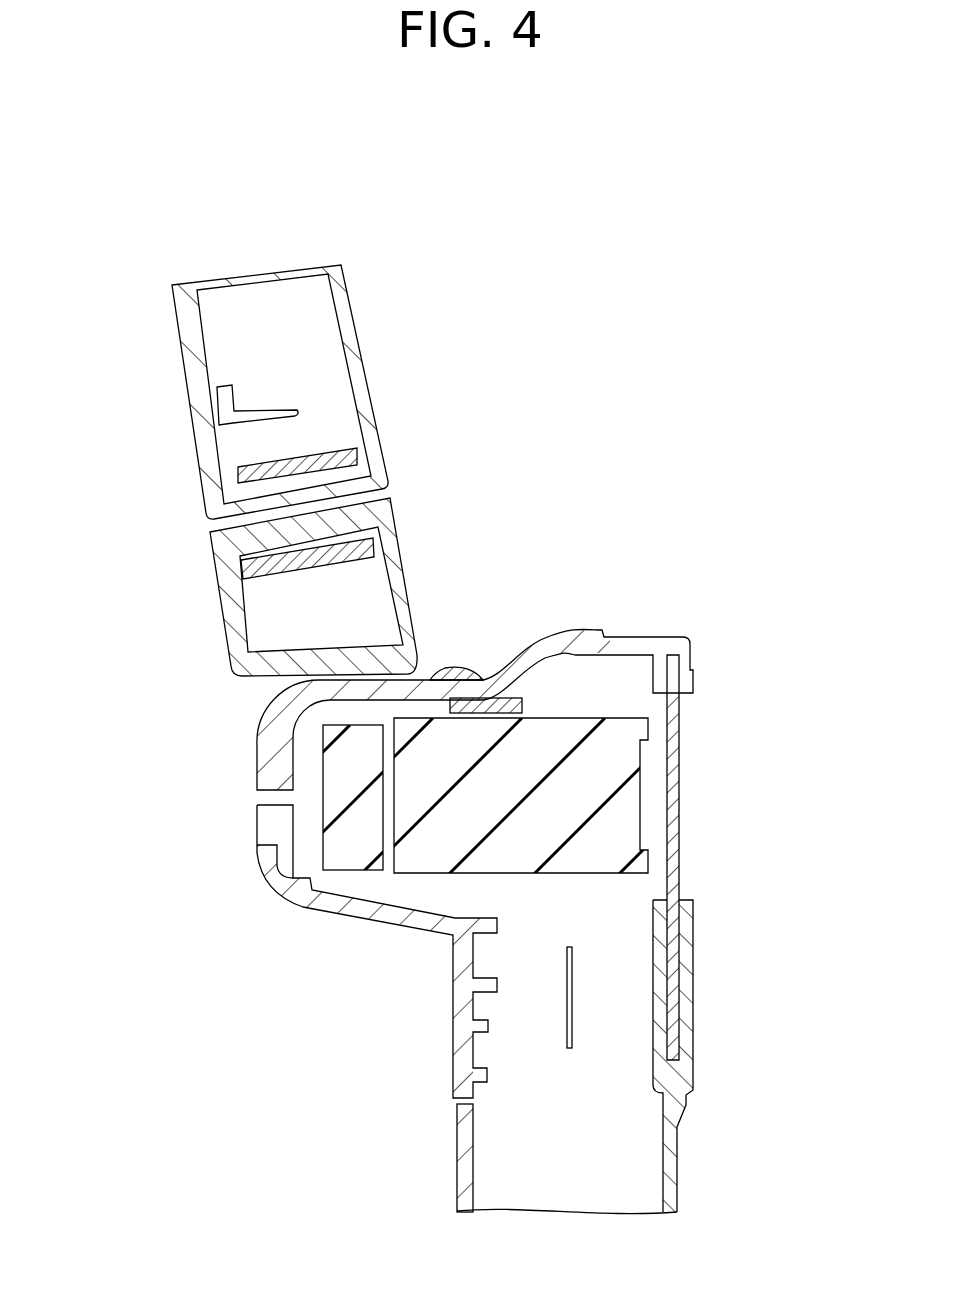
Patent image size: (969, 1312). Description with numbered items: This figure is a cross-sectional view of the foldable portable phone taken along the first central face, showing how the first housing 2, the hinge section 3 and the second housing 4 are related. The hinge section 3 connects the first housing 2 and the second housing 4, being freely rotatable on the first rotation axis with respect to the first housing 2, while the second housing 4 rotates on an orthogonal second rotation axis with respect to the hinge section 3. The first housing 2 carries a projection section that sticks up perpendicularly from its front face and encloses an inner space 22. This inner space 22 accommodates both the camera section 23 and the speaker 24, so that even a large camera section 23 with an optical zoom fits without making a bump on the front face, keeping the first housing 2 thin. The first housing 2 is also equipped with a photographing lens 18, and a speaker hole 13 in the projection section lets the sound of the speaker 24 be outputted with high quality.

The first housing 2 is at (455, 1110).
The hinge section 3 is at (220, 608).
The second housing 4 is at (180, 355).
The speaker hole 13 is at (264, 797).
The photographing lens 18 is at (682, 775).
The inner space 22 is at (620, 892).
The camera section 23 is at (625, 738).
The speaker 24 is at (354, 860).